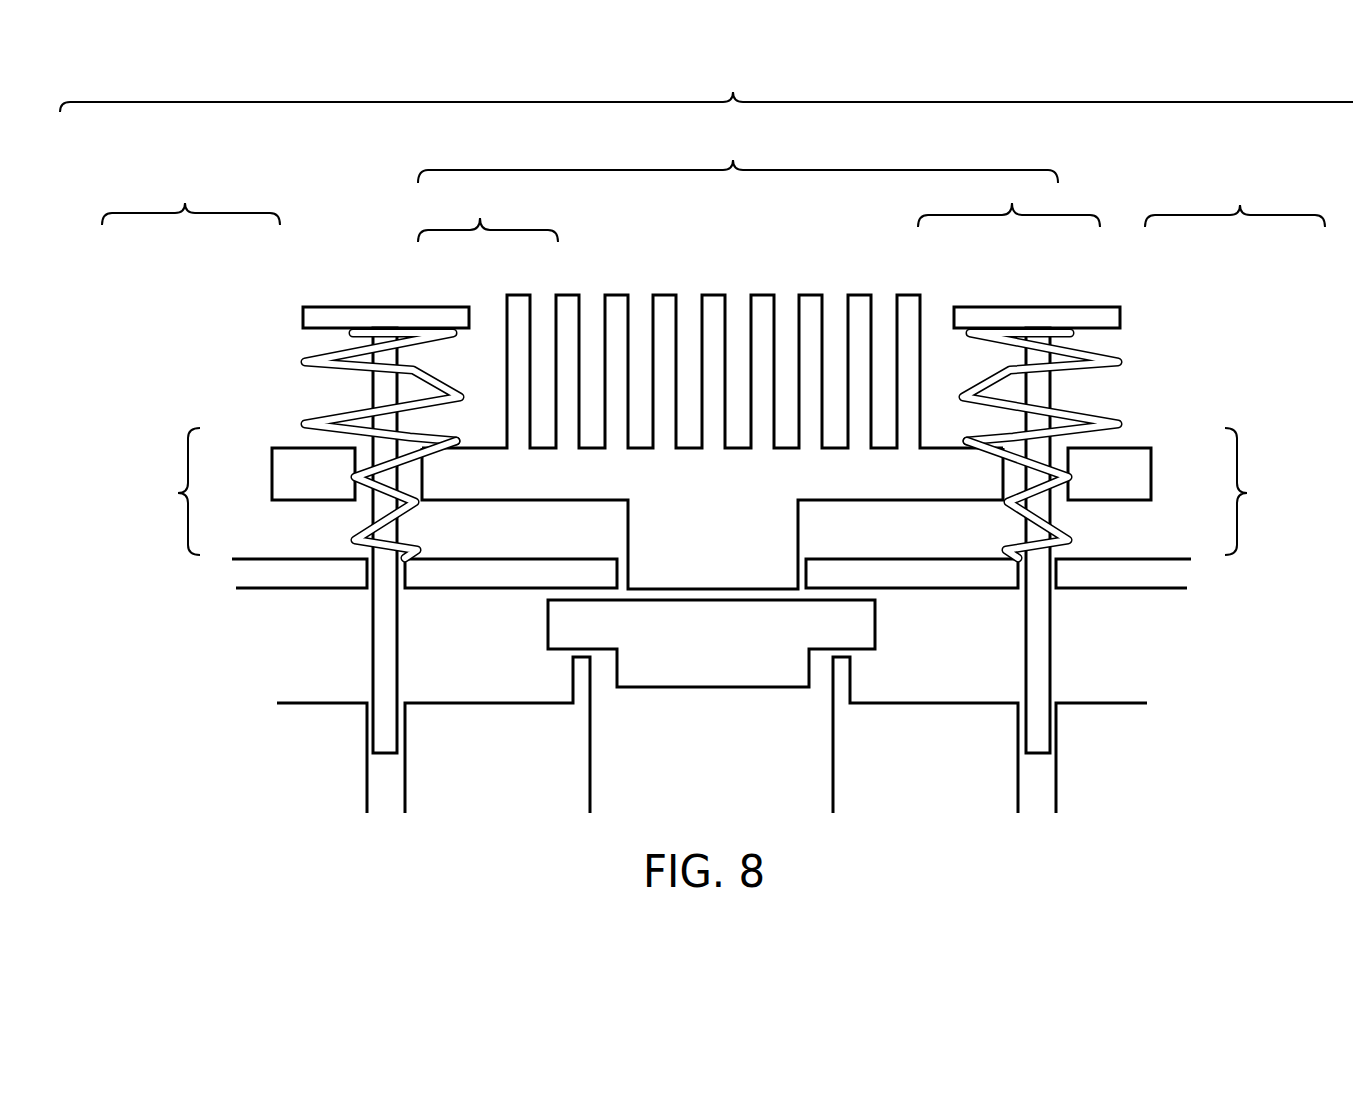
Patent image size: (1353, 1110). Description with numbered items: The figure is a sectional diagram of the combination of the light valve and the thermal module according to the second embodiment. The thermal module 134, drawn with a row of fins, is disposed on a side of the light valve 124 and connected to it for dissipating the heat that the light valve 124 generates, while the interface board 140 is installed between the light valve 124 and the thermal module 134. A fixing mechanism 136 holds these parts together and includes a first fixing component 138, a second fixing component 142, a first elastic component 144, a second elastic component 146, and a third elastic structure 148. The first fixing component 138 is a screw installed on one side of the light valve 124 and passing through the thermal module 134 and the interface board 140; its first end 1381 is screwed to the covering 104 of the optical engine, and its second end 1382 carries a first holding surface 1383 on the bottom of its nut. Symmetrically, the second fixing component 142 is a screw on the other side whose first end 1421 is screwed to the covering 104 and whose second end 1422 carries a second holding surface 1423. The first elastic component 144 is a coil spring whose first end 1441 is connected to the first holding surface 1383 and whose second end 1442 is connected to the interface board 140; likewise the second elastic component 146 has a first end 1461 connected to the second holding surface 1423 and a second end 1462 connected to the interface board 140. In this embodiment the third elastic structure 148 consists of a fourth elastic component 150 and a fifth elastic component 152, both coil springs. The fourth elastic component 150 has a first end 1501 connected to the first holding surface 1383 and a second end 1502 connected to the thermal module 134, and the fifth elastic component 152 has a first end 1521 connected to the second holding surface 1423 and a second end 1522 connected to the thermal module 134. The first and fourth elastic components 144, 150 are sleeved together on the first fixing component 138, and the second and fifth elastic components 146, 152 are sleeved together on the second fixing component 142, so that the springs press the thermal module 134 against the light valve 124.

The covering 104 is at (1130, 703).
The light valve 124 is at (727, 673).
The thermal module 134 is at (866, 295).
The fixing mechanism 136 is at (706, 81).
The first fixing component 138 is at (1148, 472).
The first end 1381 is at (1040, 755).
The second end 1382 is at (1122, 322).
The first holding surface 1383 is at (1103, 334).
The interface board 140 is at (1100, 575).
The second fixing component 142 is at (275, 471).
The first end 1421 is at (377, 755).
The second end 1422 is at (303, 322).
The second holding surface 1423 is at (363, 332).
The first elastic component 144 is at (1055, 463).
The first end 1441 is at (1090, 345).
The second end 1442 is at (1070, 553).
The second elastic component 146 is at (367, 459).
The first end 1461 is at (357, 333).
The second end 1462 is at (402, 552).
The third elastic structure 148 is at (738, 320).
The fourth elastic component 150 is at (1018, 362).
The first end 1501 is at (1110, 330).
The second end 1502 is at (965, 358).
The fifth elastic component 152 is at (431, 368).
The first end 1521 is at (457, 333).
The second end 1522 is at (452, 443).